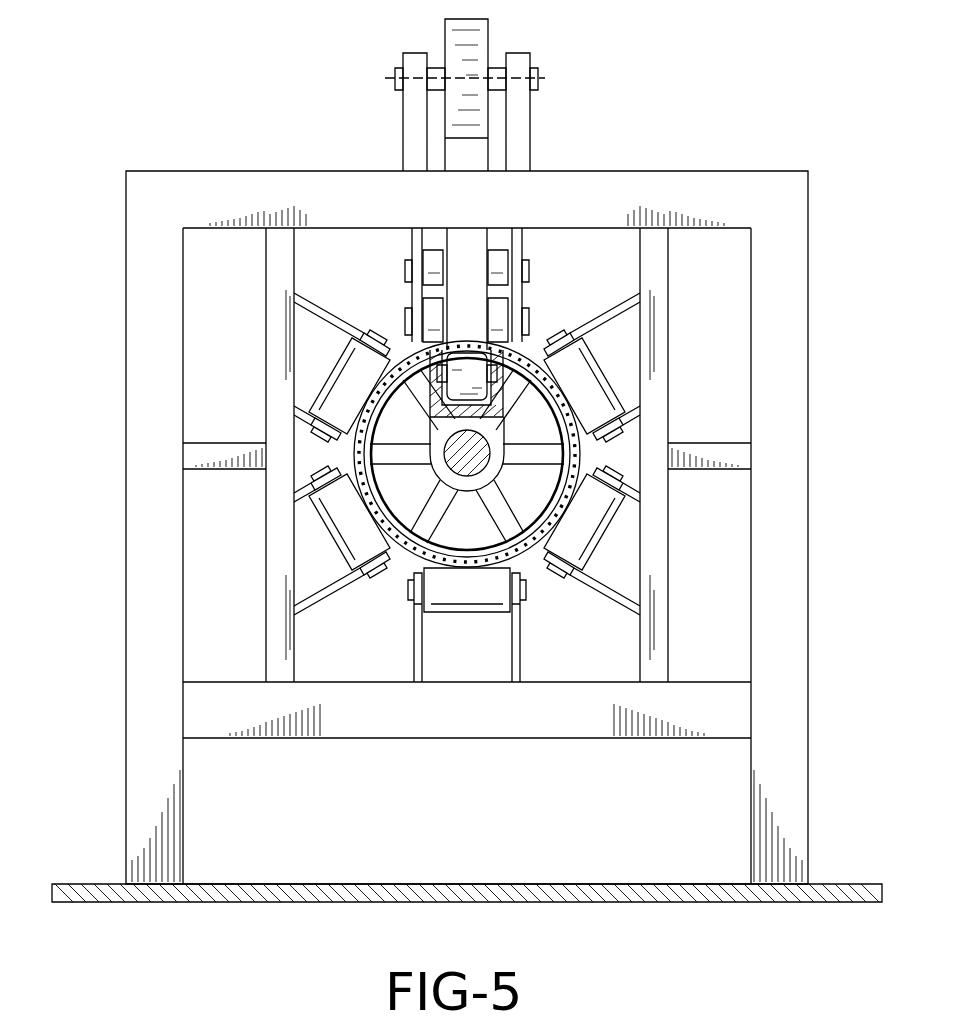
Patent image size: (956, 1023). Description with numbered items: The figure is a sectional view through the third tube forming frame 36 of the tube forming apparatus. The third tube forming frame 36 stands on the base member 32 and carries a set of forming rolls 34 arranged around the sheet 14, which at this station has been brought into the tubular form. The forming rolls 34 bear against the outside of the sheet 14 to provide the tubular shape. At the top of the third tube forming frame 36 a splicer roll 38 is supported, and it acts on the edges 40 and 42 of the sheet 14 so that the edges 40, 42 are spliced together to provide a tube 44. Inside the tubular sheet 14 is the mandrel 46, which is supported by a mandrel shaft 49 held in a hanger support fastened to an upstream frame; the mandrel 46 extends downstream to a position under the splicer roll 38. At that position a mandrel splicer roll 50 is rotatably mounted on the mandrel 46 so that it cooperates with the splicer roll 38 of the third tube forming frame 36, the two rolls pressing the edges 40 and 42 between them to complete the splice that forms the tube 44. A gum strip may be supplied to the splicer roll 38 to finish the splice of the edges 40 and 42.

The sheet 14 is at (550, 382).
The base member 32 is at (573, 886).
The forming rolls 34 is at (350, 383).
The third tube forming frame 36 is at (780, 565).
The splicer roll 38 is at (497, 313).
The edge of the sheet 40 is at (517, 342).
The edge of the sheet 42 is at (418, 343).
The tube 44 is at (383, 380).
The mandrel 46 is at (400, 552).
The mandrel shaft 49 is at (460, 453).
The mandrel splicer roll 50 is at (470, 368).